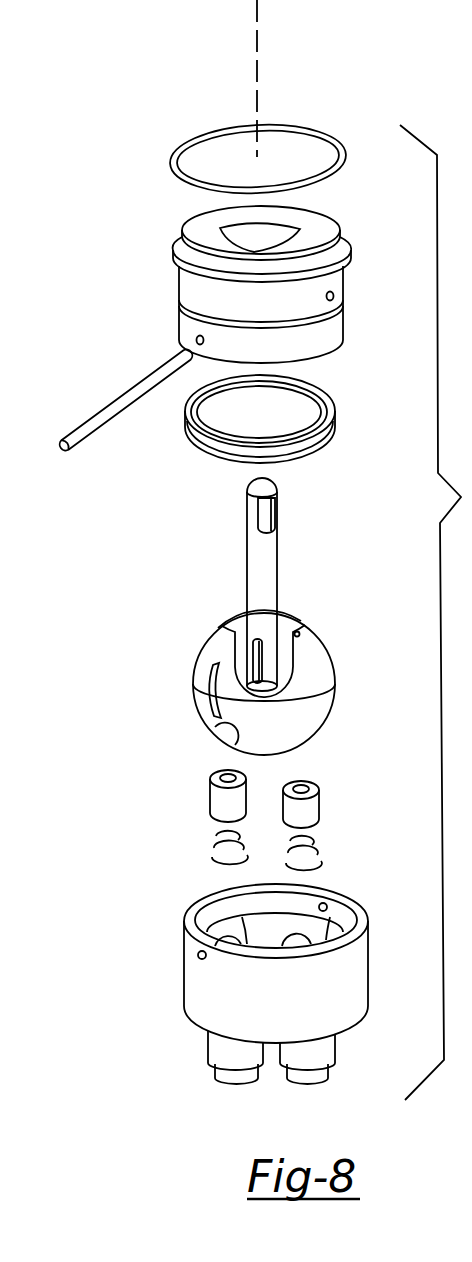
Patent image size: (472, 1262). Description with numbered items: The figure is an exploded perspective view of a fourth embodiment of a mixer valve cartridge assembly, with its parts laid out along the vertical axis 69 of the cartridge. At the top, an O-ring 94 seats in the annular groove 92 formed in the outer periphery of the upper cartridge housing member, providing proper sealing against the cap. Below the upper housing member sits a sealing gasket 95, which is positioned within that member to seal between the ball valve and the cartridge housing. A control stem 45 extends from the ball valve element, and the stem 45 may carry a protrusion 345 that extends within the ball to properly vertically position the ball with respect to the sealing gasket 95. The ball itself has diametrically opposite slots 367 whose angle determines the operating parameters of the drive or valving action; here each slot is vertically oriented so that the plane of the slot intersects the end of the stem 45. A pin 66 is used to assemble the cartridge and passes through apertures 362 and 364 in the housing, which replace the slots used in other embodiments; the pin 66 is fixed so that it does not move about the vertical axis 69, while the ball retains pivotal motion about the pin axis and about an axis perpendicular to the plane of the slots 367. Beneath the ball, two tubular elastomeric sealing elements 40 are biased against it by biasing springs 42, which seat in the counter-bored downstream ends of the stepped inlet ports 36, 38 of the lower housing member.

The vertical axis 69 is at (257, 62).
The annular groove 92 is at (180, 147).
The O-ring 94 is at (327, 317).
The aperture 364 is at (326, 296).
The pin 66 is at (132, 393).
The sealing gasket 95 is at (217, 457).
The control stem 45 is at (273, 580).
The protrusion 345 is at (257, 612).
The slots 367 is at (298, 631).
The tubular elastomeric sealing elements 40 is at (307, 808).
The biasing springs 42 is at (315, 848).
The stepped inlet port 38 is at (328, 1052).
The aperture 362 is at (320, 904).
The stepped inlet port 36 is at (217, 1048).